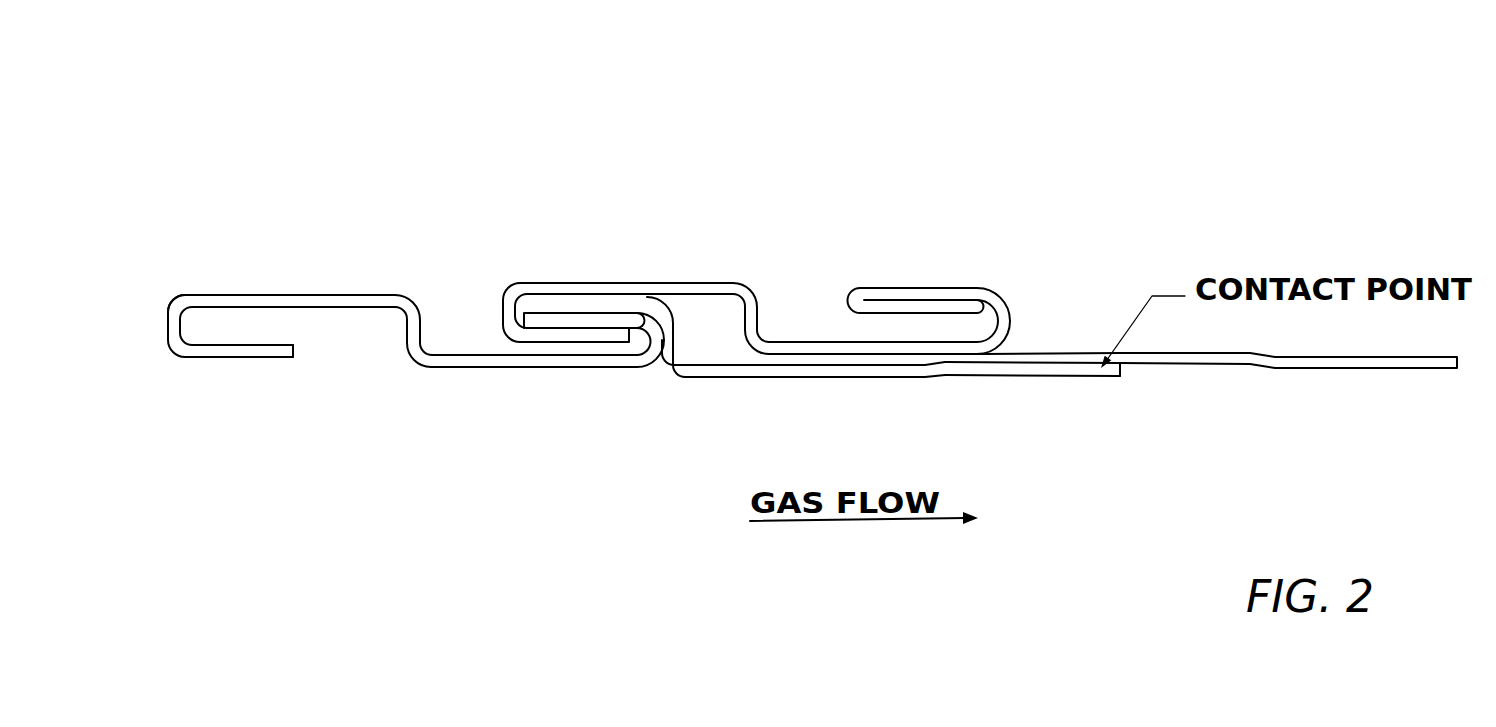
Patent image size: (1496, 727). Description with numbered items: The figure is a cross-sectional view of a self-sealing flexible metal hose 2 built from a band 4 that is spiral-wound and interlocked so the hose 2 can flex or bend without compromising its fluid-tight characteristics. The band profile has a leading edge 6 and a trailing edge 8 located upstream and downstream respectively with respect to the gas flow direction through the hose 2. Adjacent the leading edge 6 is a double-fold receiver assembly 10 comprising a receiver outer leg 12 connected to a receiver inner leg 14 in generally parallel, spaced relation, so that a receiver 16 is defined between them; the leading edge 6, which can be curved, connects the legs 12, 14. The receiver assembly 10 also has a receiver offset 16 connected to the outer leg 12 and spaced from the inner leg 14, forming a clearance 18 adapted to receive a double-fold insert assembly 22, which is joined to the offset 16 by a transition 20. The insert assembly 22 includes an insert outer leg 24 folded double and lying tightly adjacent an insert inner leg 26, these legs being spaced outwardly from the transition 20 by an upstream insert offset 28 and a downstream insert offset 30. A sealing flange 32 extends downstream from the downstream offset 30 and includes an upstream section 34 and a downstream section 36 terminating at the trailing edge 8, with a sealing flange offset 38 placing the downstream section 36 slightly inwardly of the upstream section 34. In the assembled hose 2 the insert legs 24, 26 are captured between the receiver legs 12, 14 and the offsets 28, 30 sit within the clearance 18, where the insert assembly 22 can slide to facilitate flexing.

The self-sealing flexible metal hose 2 is at (1200, 88).
The band 4 is at (183, 291).
The leading edge 6 is at (168, 328).
The trailing edge 8 is at (1480, 337).
The double-fold receiver assembly 10 is at (175, 303).
The receiver outer leg 12 is at (275, 297).
The receiver inner leg 14 is at (293, 355).
The receiver 16 is at (221, 343).
The clearance 18 is at (293, 345).
The transition 20 is at (510, 367).
The double-fold insert assembly 22 is at (850, 287).
The insert outer leg 24 is at (893, 287).
The insert inner leg 26 is at (893, 316).
The upstream insert offset 28 is at (982, 324).
The downstream insert offset 30 is at (1012, 322).
The sealing flange 32 is at (1122, 380).
The upstream section 34 is at (828, 380).
The downstream section 36 is at (1013, 380).
The sealing flange offset 38 is at (933, 380).